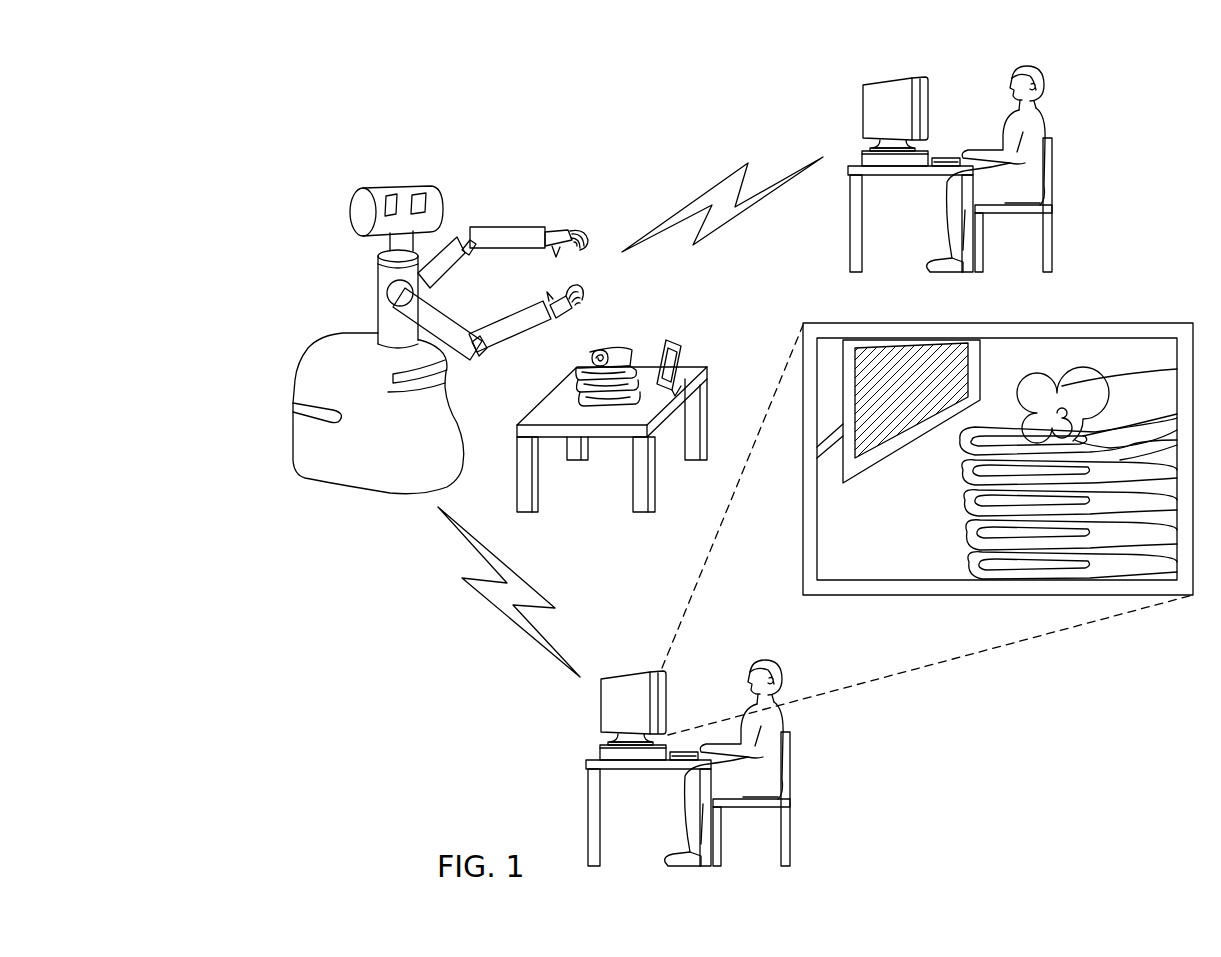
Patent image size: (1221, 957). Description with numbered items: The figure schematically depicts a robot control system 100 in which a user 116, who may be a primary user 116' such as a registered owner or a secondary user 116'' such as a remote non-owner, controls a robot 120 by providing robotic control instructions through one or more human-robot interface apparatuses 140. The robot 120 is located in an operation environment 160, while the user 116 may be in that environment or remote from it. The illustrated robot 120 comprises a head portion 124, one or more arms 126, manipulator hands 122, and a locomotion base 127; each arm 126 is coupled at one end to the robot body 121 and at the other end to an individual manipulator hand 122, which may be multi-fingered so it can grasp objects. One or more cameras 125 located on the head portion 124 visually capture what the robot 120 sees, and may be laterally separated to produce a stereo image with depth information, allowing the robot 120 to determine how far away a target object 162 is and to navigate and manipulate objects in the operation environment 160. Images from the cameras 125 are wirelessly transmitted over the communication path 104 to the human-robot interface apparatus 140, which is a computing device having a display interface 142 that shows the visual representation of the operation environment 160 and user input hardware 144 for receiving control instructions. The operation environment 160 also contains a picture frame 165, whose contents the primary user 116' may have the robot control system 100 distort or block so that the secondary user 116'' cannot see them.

The robot control system 100 is at (215, 103).
The communication path 104 is at (727, 178).
The user 116 is at (909, 457).
The primary user 116' is at (1019, 160).
The secondary user 116'' is at (732, 738).
The robot 120 is at (333, 200).
The robot body 121 is at (377, 304).
The manipulator hand 122 is at (567, 231).
The head portion 124 is at (437, 188).
The cameras 125 is at (388, 197).
The arms 126 is at (497, 227).
The locomotion base 127 is at (295, 387).
The human-robot interface apparatus 140 is at (858, 83).
The display interface 142 is at (928, 78).
The user input hardware 144 is at (943, 157).
The operation environment 160 is at (615, 225).
The target object 162 is at (620, 349).
The picture frame 165 is at (700, 335).